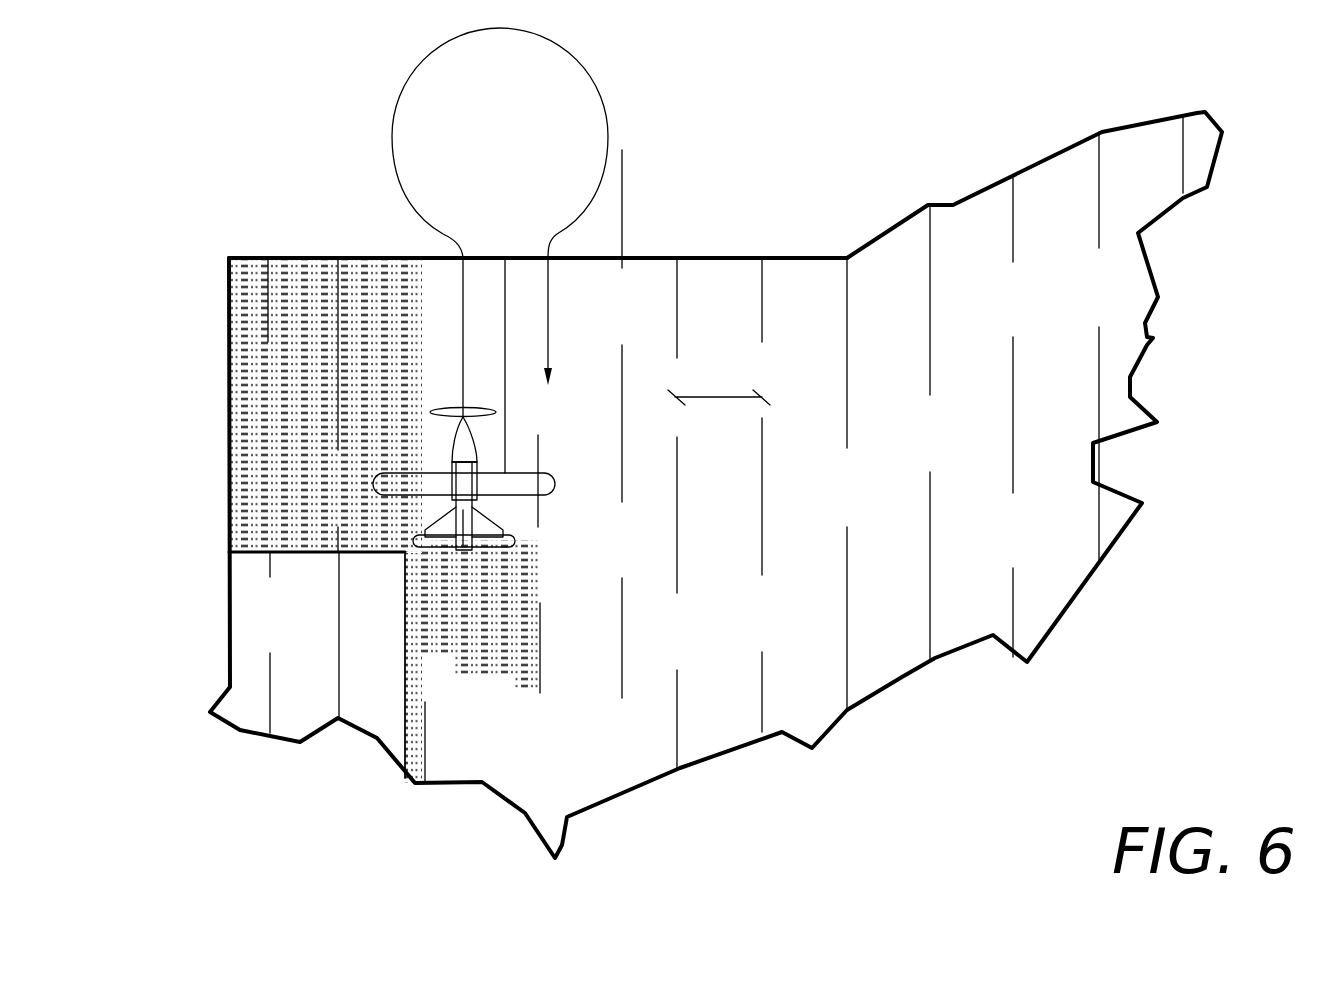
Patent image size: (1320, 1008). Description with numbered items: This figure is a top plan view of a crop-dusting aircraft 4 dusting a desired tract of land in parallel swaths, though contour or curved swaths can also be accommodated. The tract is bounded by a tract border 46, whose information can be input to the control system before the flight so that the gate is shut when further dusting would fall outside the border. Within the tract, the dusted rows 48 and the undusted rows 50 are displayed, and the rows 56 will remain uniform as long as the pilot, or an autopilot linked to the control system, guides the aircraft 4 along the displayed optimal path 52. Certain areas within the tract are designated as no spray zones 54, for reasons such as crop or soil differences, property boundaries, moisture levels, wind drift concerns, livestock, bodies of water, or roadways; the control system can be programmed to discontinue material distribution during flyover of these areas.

The crop-dusting aircraft 4 is at (465, 480).
The tract border 46 is at (905, 213).
The dusted rows 48 is at (257, 378).
The undusted rows 50 is at (642, 272).
The optimal path 52 is at (395, 117).
The no spray zones 54 is at (255, 662).
The rows 56 is at (718, 397).